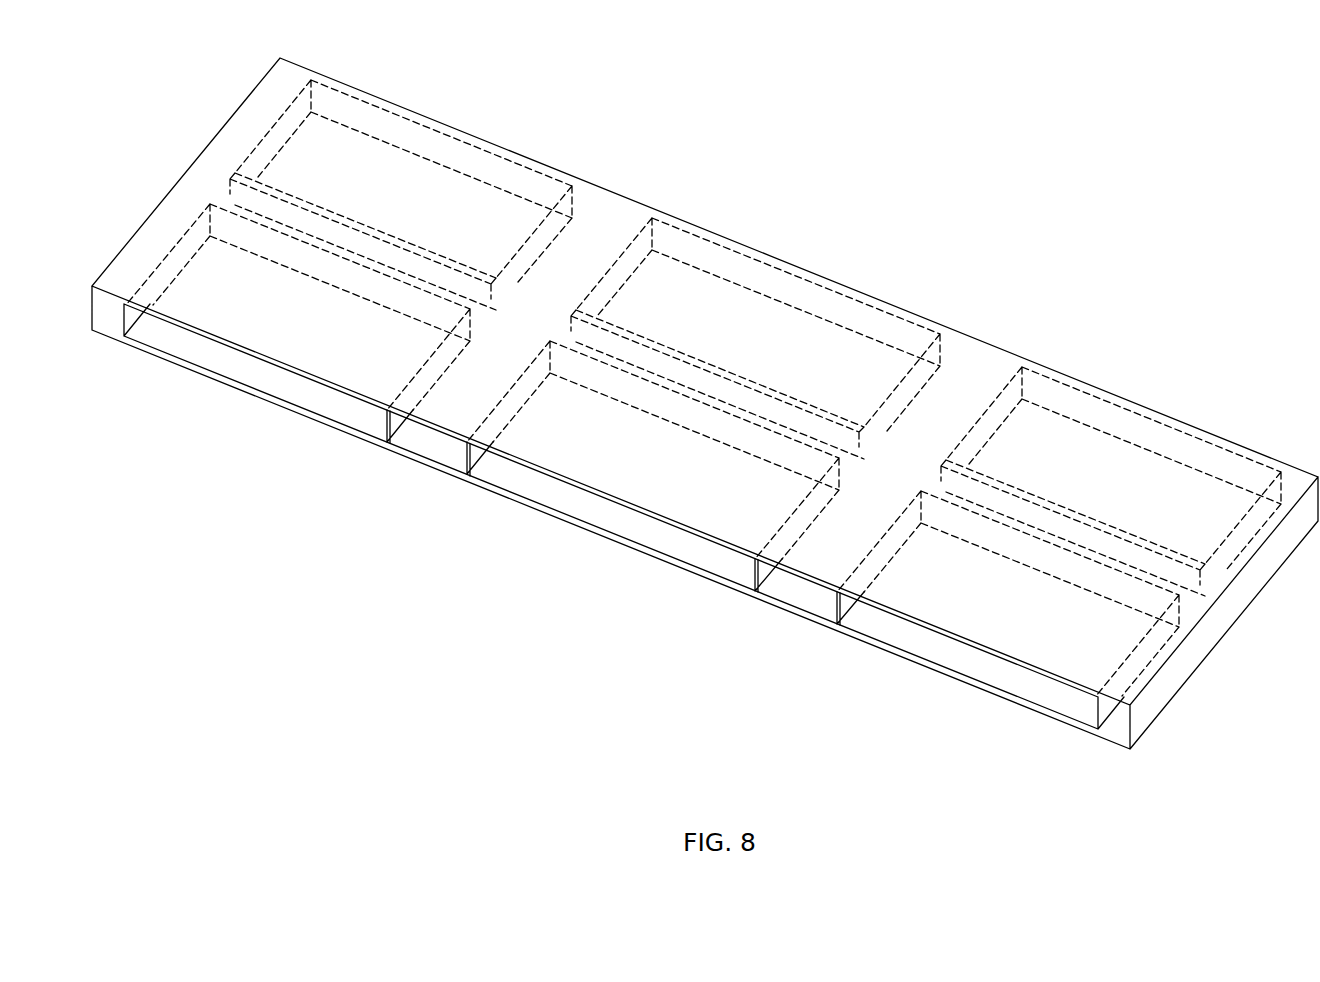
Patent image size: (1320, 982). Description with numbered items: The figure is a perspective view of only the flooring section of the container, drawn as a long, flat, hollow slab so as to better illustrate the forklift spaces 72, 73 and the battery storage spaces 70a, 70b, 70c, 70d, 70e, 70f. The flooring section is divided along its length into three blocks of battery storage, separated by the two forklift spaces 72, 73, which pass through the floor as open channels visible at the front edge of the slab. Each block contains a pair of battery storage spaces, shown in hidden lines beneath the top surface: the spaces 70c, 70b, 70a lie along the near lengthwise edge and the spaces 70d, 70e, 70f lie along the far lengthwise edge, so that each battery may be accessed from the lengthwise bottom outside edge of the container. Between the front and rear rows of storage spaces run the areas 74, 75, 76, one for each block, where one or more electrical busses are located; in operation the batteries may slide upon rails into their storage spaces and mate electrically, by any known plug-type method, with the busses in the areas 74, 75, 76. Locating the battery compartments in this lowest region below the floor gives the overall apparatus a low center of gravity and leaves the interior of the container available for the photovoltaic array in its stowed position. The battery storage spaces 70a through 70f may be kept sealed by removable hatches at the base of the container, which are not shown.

The battery storage space 70a is at (950, 657).
The battery storage space 70b is at (580, 508).
The battery storage space 70c is at (200, 357).
The battery storage space 70d is at (418, 176).
The battery storage space 70e is at (798, 330).
The battery storage space 70f is at (1168, 480).
The forklift space 72 is at (805, 600).
The forklift space 73 is at (433, 450).
The electrical bus area 74 is at (373, 247).
The electrical bus area 75 is at (735, 390).
The electrical bus area 76 is at (1088, 535).